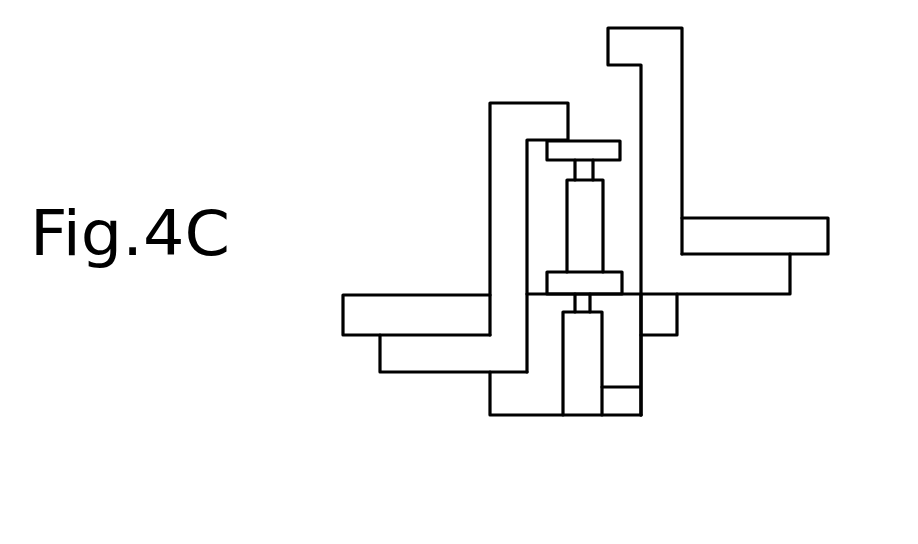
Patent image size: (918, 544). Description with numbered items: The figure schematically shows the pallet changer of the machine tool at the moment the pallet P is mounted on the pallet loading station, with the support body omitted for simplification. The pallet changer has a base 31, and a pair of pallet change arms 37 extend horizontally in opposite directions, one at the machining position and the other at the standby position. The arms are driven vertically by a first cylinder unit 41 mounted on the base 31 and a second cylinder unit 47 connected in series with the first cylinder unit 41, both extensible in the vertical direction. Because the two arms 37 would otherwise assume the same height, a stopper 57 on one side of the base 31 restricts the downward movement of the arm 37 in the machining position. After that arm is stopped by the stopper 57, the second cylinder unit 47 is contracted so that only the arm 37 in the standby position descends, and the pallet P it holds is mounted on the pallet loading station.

The pallet P is at (398, 303).
The pallet change arms 37 is at (507, 180).
The second cylinder unit 47 is at (603, 208).
The first cylinder unit 41 is at (640, 389).
The base 31 is at (642, 356).
The stopper 57 is at (677, 317).